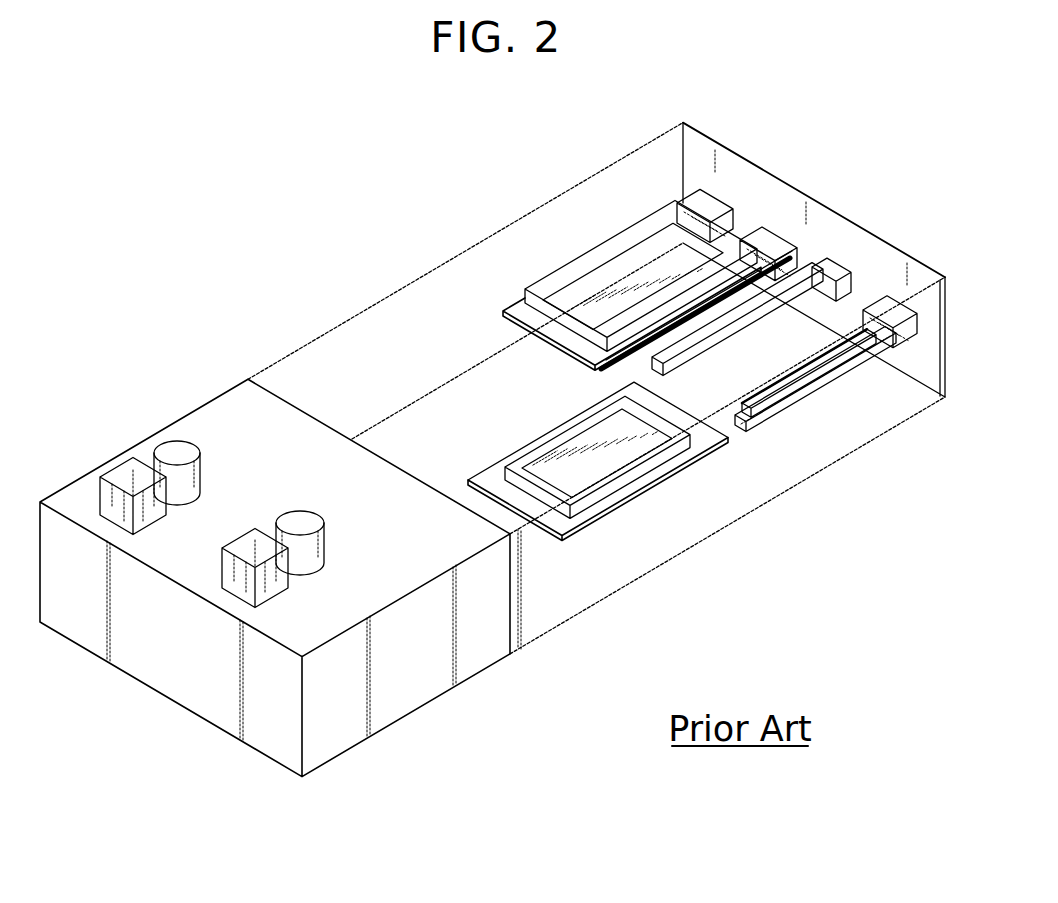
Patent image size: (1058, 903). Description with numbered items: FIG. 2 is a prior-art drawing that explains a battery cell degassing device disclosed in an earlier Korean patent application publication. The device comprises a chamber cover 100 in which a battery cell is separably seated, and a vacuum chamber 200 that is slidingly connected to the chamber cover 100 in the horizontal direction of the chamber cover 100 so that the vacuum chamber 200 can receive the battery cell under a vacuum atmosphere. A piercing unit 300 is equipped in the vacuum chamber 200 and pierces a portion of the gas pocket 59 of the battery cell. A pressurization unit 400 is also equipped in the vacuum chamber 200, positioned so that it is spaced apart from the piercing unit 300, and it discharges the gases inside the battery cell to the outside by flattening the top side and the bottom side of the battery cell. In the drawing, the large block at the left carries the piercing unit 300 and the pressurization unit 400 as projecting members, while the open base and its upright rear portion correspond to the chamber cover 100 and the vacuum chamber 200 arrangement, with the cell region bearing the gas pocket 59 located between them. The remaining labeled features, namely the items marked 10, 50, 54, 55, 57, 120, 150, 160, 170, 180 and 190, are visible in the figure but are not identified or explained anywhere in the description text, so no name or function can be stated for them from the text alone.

The substrate processing apparatus (prior art) 10 is at (253, 210).
The substrate tray 50 is at (633, 260).
The tray rim frame 54 is at (553, 392).
The tray recess 55 is at (572, 438).
The tray inner edge 57 is at (538, 447).
The gas pocket 59 is at (490, 488).
The chamber cover 100 is at (603, 158).
The side wall 120 is at (704, 137).
The drive block 150 is at (748, 197).
The slider block 160 is at (824, 274).
The moving rail 170 is at (802, 387).
The guide rail 180 is at (793, 408).
The end block 190 is at (858, 285).
The vacuum chamber 200 is at (187, 374).
The piercing unit 300 is at (110, 463).
The pressurization unit 400 is at (152, 437).